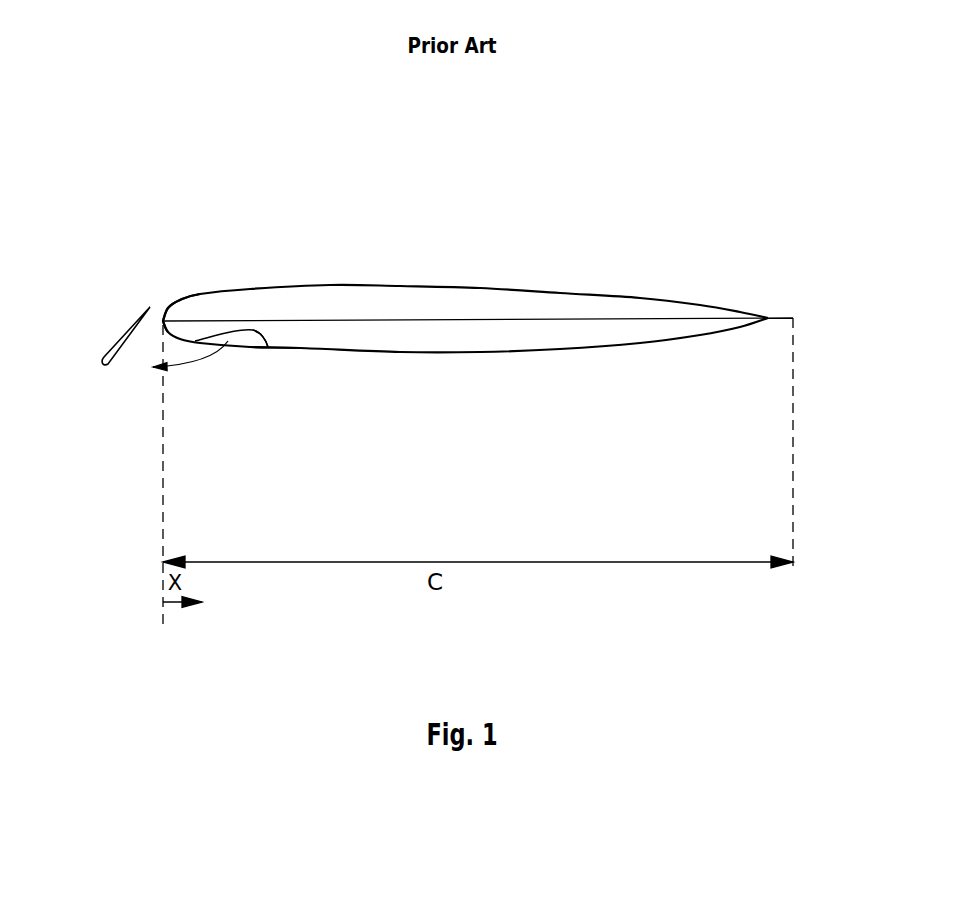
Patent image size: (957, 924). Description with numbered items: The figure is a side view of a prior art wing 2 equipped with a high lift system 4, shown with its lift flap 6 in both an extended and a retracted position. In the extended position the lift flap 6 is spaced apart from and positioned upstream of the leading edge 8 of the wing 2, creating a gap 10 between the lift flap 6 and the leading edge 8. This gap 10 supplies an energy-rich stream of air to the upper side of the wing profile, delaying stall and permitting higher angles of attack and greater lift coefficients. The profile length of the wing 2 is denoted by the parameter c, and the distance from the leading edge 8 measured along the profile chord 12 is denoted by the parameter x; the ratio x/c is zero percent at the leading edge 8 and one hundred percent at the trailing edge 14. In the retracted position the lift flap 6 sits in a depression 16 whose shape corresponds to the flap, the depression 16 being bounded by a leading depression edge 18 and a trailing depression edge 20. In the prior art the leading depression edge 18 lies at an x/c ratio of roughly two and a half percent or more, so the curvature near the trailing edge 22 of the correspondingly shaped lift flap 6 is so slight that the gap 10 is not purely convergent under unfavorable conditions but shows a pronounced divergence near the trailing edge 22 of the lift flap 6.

The wing 2 is at (410, 273).
The high lift system 4 is at (217, 208).
The lift flap 6 is at (103, 359).
The leading edge 8 is at (160, 312).
The gap 10 is at (152, 332).
The profile chord 12 is at (525, 320).
The trailing edge 14 is at (797, 308).
The depression 16 is at (267, 347).
The leading depression edge 18 is at (185, 340).
The trailing depression edge 20 is at (267, 347).
The trailing edge of the lift flap 22 is at (142, 302).